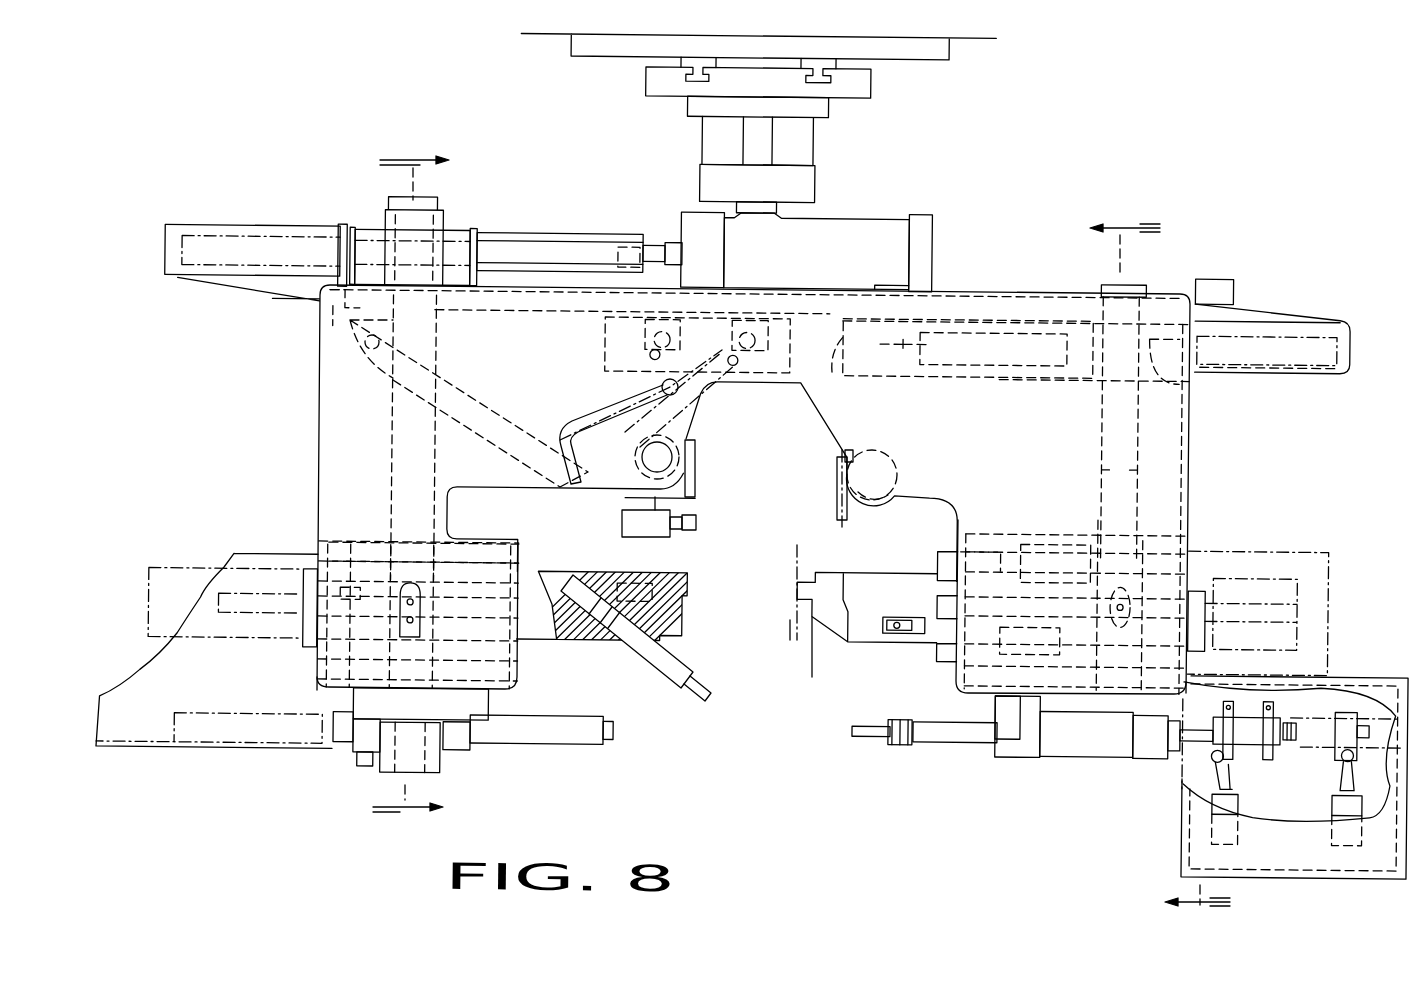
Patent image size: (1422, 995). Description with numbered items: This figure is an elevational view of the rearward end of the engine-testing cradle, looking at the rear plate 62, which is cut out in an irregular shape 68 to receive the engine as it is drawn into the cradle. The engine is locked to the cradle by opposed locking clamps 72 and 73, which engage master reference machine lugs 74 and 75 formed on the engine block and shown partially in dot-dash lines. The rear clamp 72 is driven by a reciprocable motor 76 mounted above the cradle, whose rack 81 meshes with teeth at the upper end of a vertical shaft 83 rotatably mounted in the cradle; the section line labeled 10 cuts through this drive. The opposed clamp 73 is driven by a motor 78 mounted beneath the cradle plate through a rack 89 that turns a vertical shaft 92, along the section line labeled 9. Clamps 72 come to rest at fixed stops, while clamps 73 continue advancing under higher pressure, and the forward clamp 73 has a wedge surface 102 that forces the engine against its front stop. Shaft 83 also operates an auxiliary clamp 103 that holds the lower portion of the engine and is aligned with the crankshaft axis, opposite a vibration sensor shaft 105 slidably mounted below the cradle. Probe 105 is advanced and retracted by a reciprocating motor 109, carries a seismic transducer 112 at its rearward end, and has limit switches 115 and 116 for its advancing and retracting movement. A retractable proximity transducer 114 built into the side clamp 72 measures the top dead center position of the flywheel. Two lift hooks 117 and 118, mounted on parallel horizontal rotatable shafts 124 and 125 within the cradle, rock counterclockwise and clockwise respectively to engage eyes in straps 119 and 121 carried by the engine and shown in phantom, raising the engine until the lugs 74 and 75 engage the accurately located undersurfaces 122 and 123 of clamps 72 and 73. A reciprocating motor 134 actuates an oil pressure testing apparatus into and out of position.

The section line 9- 9 is at (1160, 545).
The section line 10- 10 is at (411, 486).
The rear plate 62 is at (1035, 440).
The cut out 68 is at (826, 424).
The locking clamp 72 is at (605, 572).
The locking clamp 73 is at (890, 578).
The master reference machine lug 74 is at (695, 540).
The master reference machine lug 75 is at (800, 556).
The reciprocable motor 76 is at (860, 232).
The motor 78 is at (836, 372).
The rack 81 is at (258, 242).
The vertical shaft 83 is at (407, 443).
The rack 89 is at (990, 340).
The vertical shaft 92 is at (1137, 463).
The wedge surface 102 is at (790, 600).
The auxiliary clamp 103 is at (553, 735).
The vibration sensor shaft 105 is at (950, 732).
The reciprocating motor 109 is at (1085, 745).
The seismic transducer 112 is at (1245, 755).
The retractable proximity transducer 114 is at (640, 650).
The limit switch 115 is at (1210, 820).
The limit switch 116 is at (1332, 807).
The lift hook 117 is at (700, 455).
The lift hook 118 is at (833, 482).
The strap 119 is at (720, 414).
The strap 121 is at (855, 452).
The undersurface 122 is at (690, 600).
The undersurface 123 is at (792, 632).
The rotatable shaft 124 is at (647, 418).
The rotatable shaft 125 is at (895, 478).
The reciprocating motor 134 is at (490, 398).